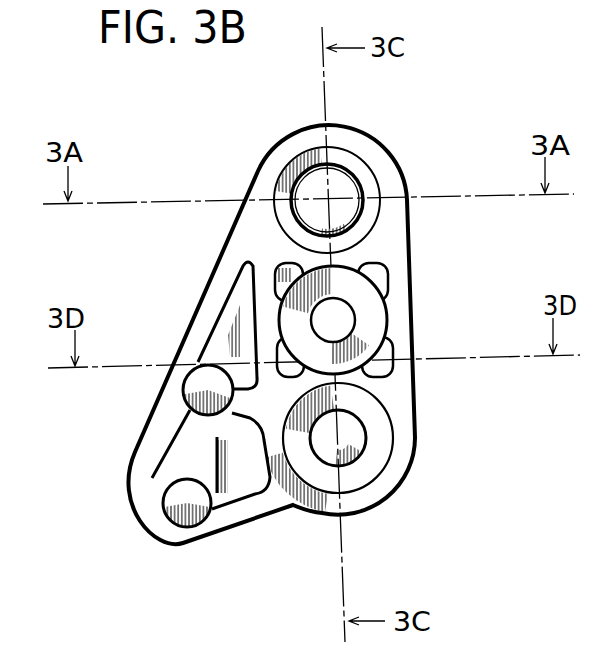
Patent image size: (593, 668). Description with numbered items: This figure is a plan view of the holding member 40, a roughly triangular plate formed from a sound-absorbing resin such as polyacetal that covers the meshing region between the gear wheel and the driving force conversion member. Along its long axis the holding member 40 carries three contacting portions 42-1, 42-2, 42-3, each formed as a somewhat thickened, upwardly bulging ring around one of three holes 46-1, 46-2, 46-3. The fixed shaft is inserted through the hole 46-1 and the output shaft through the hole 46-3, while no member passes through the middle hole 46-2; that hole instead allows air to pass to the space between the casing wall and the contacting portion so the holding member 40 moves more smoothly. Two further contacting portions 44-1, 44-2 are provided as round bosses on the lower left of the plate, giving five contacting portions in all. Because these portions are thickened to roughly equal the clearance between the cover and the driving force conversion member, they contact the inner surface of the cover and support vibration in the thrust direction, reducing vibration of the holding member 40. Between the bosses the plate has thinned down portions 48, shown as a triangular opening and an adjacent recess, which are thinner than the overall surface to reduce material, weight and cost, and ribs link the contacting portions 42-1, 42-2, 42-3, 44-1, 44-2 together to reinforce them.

The holding member 40 is at (146, 243).
The contacting portion 42-1 is at (352, 152).
The contacting portion 42-2 is at (365, 295).
The contacting portion 42-3 is at (377, 460).
The hole 46-1 is at (293, 162).
The hole 46-2 is at (340, 325).
The hole 46-3 is at (357, 437).
The thinned down portion 48 is at (240, 262).
The contacting portion 44-1 is at (180, 503).
The contacting portion 44-2 is at (197, 385).